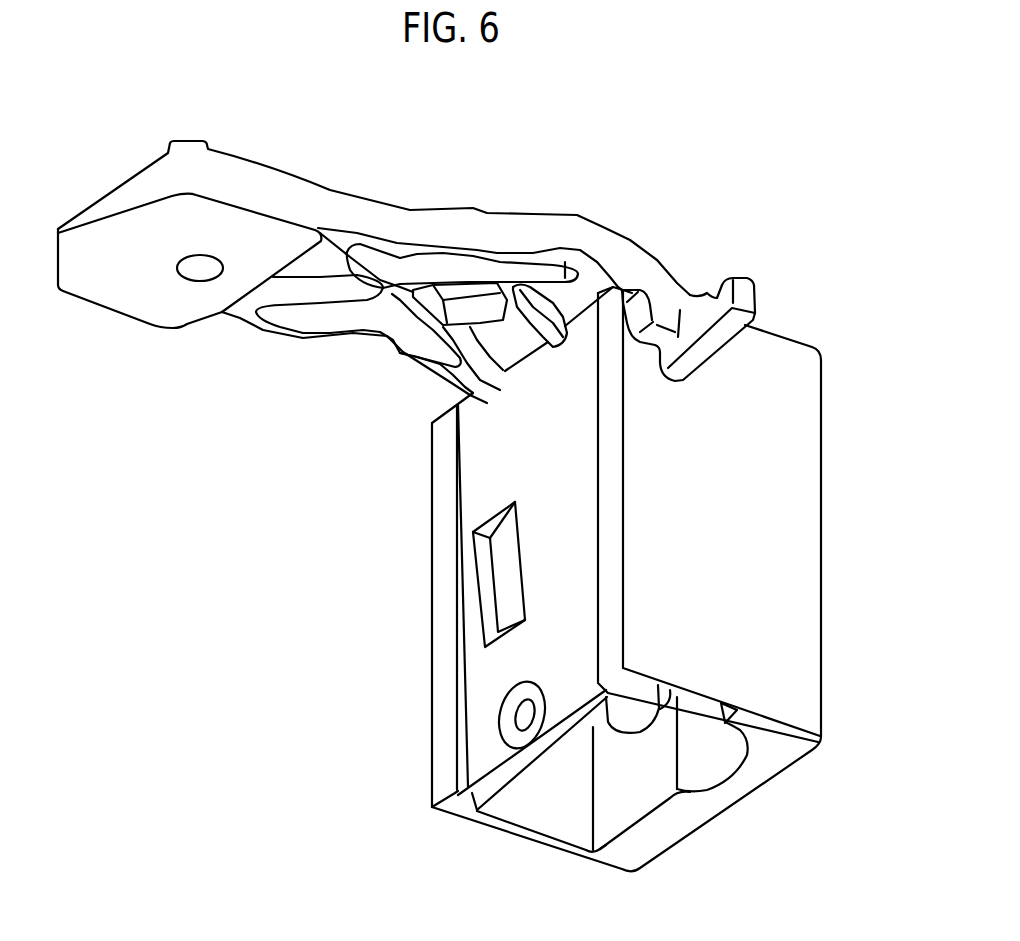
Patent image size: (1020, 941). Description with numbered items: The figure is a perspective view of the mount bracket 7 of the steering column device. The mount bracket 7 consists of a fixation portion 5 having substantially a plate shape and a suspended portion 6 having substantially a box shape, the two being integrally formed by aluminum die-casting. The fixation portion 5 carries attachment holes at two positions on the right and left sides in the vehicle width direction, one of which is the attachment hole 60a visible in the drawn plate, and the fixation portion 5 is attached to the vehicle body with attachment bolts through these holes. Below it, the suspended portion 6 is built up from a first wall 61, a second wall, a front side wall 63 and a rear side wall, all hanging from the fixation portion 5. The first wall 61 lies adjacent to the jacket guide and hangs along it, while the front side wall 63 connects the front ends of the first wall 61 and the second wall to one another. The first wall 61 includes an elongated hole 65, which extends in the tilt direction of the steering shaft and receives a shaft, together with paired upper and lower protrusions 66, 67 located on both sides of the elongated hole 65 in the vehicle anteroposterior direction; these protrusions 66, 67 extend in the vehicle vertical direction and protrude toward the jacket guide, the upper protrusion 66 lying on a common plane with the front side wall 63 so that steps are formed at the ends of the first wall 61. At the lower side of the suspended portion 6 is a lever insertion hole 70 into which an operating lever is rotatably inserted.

The fixation portion 5 is at (358, 215).
The mount bracket 7 is at (630, 229).
The attachment hole 60a is at (199, 276).
The suspended portion 6 is at (792, 637).
The first wall 61 is at (507, 458).
The front side wall 63 is at (792, 493).
The elongated hole 65 is at (488, 607).
The upper protrusion 66 is at (607, 655).
The lower protrusion 67 is at (445, 462).
The lever insertion hole 70 is at (537, 812).